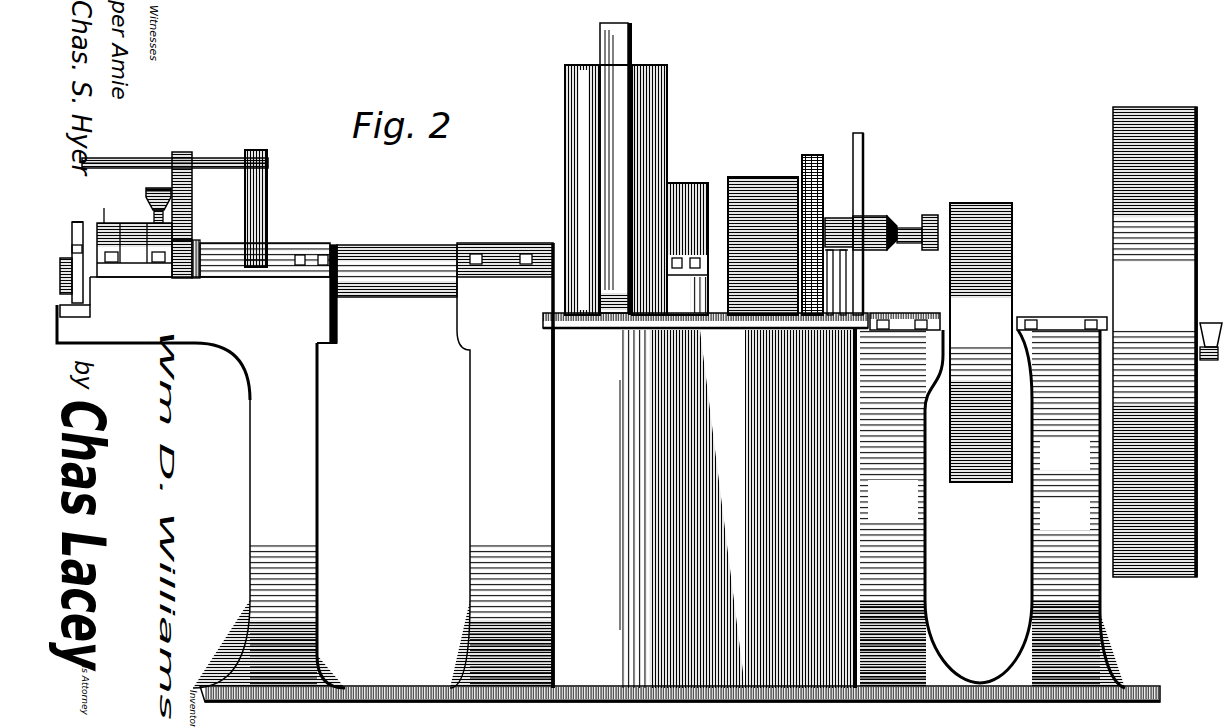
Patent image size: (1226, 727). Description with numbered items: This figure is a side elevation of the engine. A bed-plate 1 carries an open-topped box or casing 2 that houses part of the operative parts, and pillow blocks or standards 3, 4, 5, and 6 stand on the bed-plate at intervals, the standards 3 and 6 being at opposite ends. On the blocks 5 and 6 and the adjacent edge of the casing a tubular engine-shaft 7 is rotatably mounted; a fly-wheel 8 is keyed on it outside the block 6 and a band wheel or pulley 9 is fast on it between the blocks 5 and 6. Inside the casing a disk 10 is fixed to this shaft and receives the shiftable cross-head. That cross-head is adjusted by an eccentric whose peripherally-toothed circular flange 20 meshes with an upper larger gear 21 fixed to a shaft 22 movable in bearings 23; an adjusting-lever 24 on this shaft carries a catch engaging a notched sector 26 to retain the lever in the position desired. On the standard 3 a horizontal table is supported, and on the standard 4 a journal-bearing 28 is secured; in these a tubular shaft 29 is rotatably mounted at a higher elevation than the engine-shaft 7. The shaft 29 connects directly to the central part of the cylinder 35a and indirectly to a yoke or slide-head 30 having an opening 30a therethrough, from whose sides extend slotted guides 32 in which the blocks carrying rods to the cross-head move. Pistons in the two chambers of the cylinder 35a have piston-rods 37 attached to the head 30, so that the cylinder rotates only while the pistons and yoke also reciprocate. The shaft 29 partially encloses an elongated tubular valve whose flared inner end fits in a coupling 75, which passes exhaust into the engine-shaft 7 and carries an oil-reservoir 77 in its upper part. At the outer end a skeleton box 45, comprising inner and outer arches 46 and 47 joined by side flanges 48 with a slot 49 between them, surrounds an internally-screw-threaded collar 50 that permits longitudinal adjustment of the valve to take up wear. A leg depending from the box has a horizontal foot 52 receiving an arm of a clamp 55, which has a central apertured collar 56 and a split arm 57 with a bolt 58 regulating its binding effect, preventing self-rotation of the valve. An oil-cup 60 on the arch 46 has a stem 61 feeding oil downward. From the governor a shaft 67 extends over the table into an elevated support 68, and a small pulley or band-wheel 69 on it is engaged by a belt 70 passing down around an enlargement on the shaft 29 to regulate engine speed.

The bed-plate 1 is at (604, 690).
The box or casing 2 is at (704, 508).
The pillow block or standard 3 is at (269, 515).
The pillow block or standard 4 is at (499, 465).
The pillow block or standard 5 is at (920, 509).
The pillow block or standard 6 is at (1052, 509).
The engine-shaft 7 is at (1211, 330).
The fly-wheel 8 is at (1155, 342).
The band wheel or pulley 9 is at (981, 342).
The disk 10 is at (763, 233).
The peripherally-toothed circular flange 20 is at (835, 302).
The gear 21 is at (813, 223).
The shaft 22 is at (906, 245).
The bearings 23 is at (843, 218).
The adjusting-lever 24 is at (868, 218).
The notched sector 26 is at (873, 224).
The journal-bearing 28 is at (505, 247).
The tubular shaft 29 is at (397, 262).
The yoke or slide-head 30 is at (613, 177).
The opening 30a is at (630, 112).
The slotted guides 32 is at (620, 314).
The cylinder 35a is at (667, 83).
The piston-rod 37 is at (630, 158).
The skeleton box 45 is at (134, 239).
The inner arch 46 is at (158, 262).
The outer arch 47 is at (114, 262).
The side flanges 48 is at (145, 280).
The slot 49 is at (104, 206).
The internally-screw-threaded collar 50 is at (146, 203).
The horizontal foot 52 is at (78, 313).
The clamp 55 is at (71, 225).
The central apertured collar 56 is at (65, 247).
The arm 57 is at (80, 223).
The bolt 58 is at (68, 256).
The oil-cup 60 is at (171, 192).
The stem 61 is at (172, 236).
The shaft 67 is at (197, 158).
The elevated support 68 is at (269, 208).
The small pulley or band-wheel 69 is at (190, 150).
The belt 70 is at (180, 152).
The coupling 75 is at (689, 235).
The oil-reservoir 77 is at (200, 250).